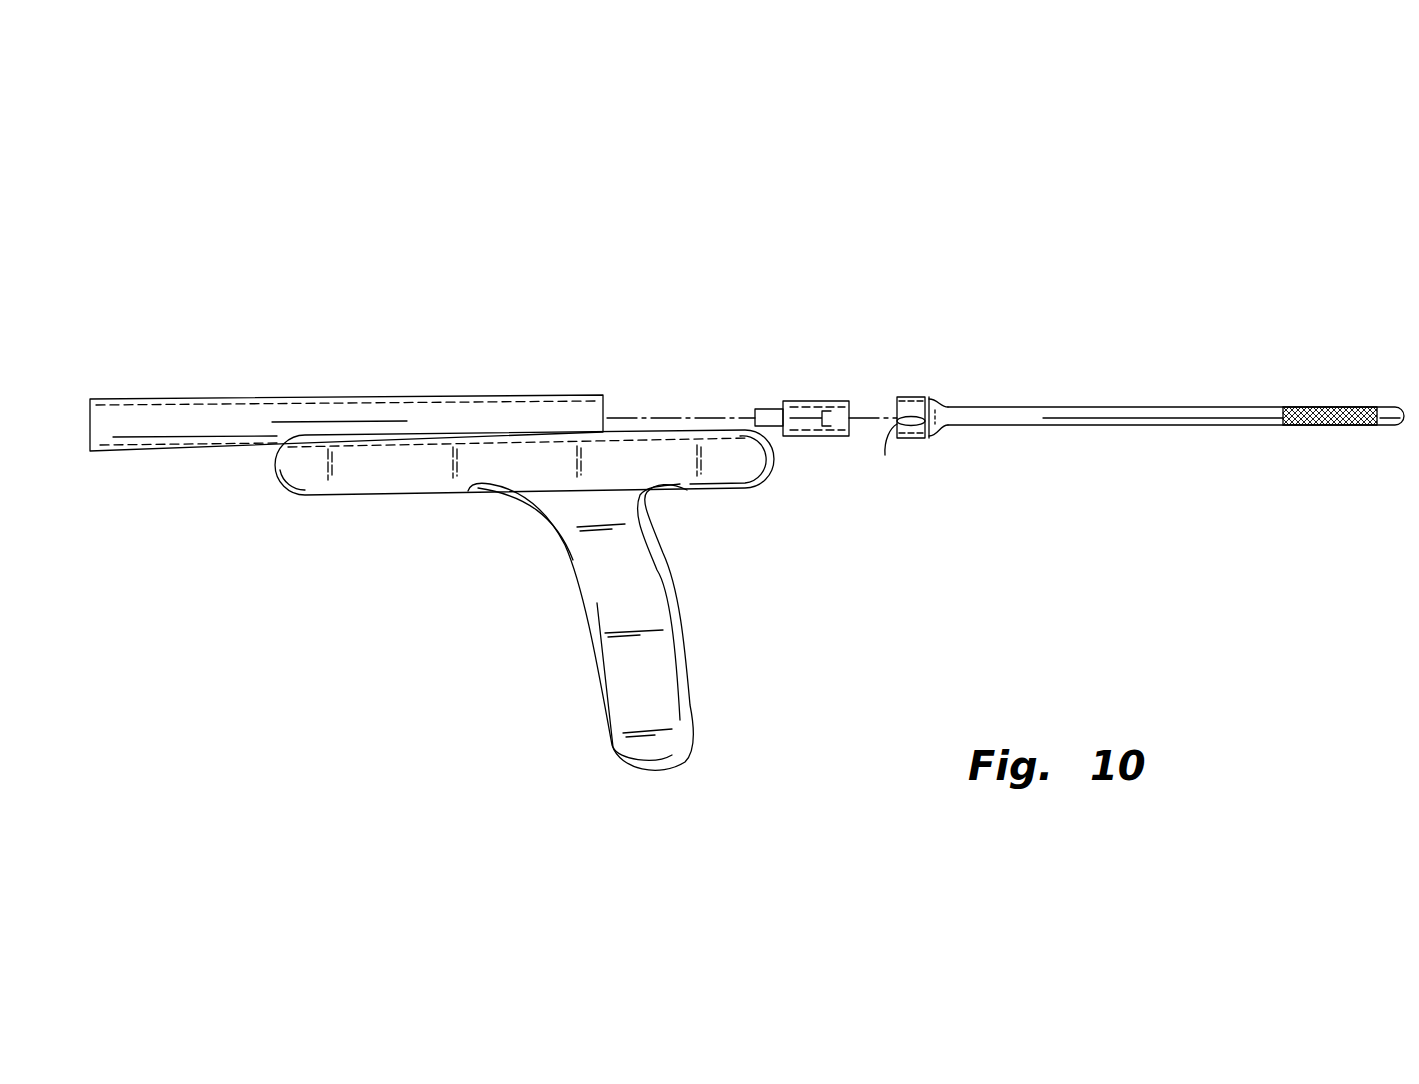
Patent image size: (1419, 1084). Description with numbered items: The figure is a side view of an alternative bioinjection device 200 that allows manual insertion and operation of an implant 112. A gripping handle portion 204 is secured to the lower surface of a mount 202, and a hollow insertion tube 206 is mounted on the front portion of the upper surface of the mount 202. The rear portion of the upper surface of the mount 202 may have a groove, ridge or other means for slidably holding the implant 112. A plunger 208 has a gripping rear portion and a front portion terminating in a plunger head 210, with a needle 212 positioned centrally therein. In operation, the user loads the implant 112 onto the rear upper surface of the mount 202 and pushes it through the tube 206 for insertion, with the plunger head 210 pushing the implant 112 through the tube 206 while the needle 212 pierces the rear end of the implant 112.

The device 200 is at (962, 269).
The mount 202 is at (330, 497).
The gripping handle portion 204 is at (595, 683).
The hollow insertion tube 206 is at (455, 395).
The implant 112 is at (826, 401).
The plunger head 210 is at (925, 402).
The needle 212 is at (885, 455).
The plunger 208 is at (1095, 408).